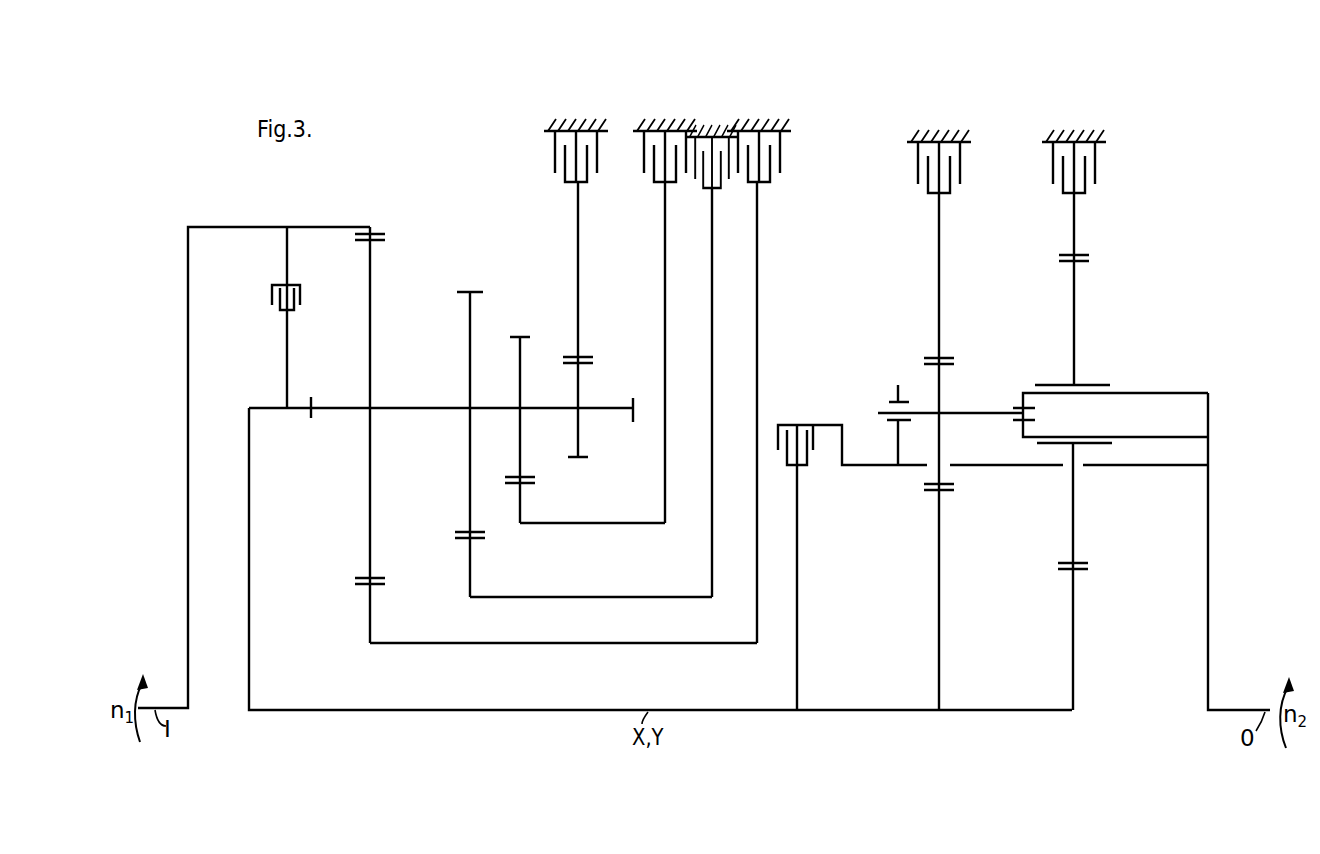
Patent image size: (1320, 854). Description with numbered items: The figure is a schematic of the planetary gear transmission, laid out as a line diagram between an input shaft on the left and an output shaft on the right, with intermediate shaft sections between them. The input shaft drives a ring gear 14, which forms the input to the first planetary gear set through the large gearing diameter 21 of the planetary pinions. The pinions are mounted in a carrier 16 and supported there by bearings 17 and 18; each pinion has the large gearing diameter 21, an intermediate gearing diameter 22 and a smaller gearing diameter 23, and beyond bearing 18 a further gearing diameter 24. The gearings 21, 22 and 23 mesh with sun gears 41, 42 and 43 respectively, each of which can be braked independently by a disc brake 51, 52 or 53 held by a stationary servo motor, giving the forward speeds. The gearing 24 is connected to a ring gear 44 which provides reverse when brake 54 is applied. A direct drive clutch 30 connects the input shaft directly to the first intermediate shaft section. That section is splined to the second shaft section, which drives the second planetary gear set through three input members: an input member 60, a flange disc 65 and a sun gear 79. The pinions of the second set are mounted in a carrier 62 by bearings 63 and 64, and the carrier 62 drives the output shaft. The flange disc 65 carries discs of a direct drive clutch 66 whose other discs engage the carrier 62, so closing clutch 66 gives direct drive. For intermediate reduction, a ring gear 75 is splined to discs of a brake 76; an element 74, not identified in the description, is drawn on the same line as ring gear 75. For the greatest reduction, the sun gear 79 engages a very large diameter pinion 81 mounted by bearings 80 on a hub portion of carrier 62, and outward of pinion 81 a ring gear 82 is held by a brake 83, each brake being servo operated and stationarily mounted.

The ring gear 14 is at (315, 227).
The carrier 16 is at (287, 352).
The bearing 17 is at (311, 418).
The bearing 18 is at (549, 408).
The large gearing diameter 21 is at (368, 484).
The intermediate gearing diameter 22 is at (469, 484).
The smaller gearing diameter 23 is at (520, 432).
The further gearing diameter 24 is at (578, 385).
The direct drive clutch 30 is at (272, 300).
The sun gear 41 is at (368, 628).
The sun gear 42 is at (469, 573).
The sun gear 43 is at (520, 523).
The ring gear 44 is at (578, 327).
The disc brake 51 is at (777, 128).
The disc brake 52 is at (713, 133).
The disc brake 53 is at (670, 128).
The brake 54 is at (586, 128).
The input member 60 is at (940, 600).
The carrier 62 is at (1208, 533).
The bearing 63 is at (897, 395).
The bearing 64 is at (1016, 408).
The flange disc 65 is at (797, 580).
The direct drive clutch 66 is at (805, 425).
The gear 74 is at (925, 360).
The ring gear 75 is at (940, 250).
The brake 76 is at (947, 135).
The sun gear 79 is at (1073, 662).
The bearing 80 is at (1098, 445).
The very large diameter pinion 81 is at (1073, 528).
The ring gear 82 is at (1074, 215).
The brake 83 is at (1085, 135).